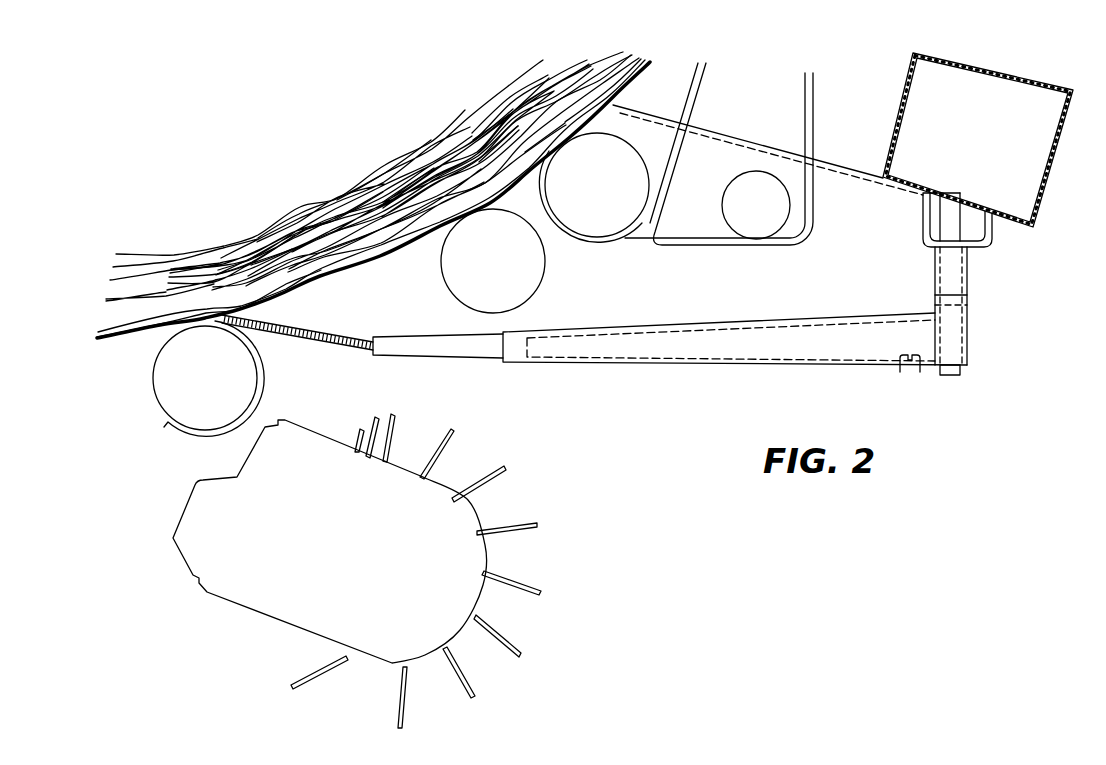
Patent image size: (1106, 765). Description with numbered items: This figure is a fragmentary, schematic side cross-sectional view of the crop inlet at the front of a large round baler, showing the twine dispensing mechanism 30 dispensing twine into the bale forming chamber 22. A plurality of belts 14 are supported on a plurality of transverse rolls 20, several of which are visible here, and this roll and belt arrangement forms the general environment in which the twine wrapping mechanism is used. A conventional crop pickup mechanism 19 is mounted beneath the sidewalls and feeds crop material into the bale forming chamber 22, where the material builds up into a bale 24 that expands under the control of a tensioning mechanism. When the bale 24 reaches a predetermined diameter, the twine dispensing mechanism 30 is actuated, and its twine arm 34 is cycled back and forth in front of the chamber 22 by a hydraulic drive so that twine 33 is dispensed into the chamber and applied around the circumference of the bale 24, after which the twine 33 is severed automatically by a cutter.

The belts 14 is at (703, 97).
The crop pickup mechanism 19 is at (390, 552).
The transverse rolls 20 is at (507, 248).
The bale forming chamber 22 is at (257, 178).
The bale 24 is at (368, 227).
The twine dispensing mechanism 30 is at (849, 377).
The twine 33 is at (345, 333).
The twine arm 34 is at (648, 348).